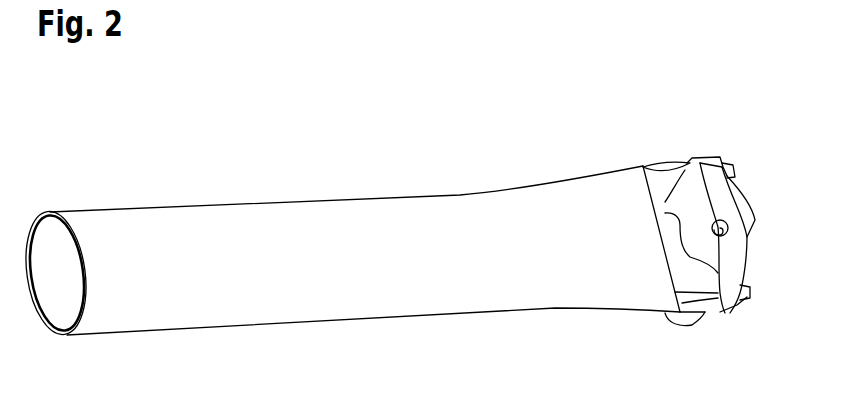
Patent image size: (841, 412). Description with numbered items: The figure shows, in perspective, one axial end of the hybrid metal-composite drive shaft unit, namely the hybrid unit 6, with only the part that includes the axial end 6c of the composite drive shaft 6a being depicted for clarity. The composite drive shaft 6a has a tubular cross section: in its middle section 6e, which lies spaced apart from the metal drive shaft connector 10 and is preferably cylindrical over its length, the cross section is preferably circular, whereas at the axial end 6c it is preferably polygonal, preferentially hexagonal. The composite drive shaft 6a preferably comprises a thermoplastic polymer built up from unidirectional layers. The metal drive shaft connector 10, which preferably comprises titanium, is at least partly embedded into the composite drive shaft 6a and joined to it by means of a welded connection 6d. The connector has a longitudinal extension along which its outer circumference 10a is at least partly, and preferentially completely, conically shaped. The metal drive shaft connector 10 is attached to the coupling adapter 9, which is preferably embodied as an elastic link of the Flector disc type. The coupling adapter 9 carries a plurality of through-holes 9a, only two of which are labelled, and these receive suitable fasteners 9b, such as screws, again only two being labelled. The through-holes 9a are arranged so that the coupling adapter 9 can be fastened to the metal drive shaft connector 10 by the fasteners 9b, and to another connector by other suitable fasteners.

The hybrid unit 6 is at (354, 245).
The composite drive shaft 6a is at (175, 242).
The axial end 6c is at (636, 162).
The welded connection 6d is at (642, 162).
The middle section 6e is at (188, 334).
The coupling adapter 9 is at (739, 219).
The through-holes 9a is at (684, 178).
The fasteners 9b is at (723, 168).
The metal drive shaft connector 10 is at (660, 161).
The outer circumference 10a is at (703, 308).